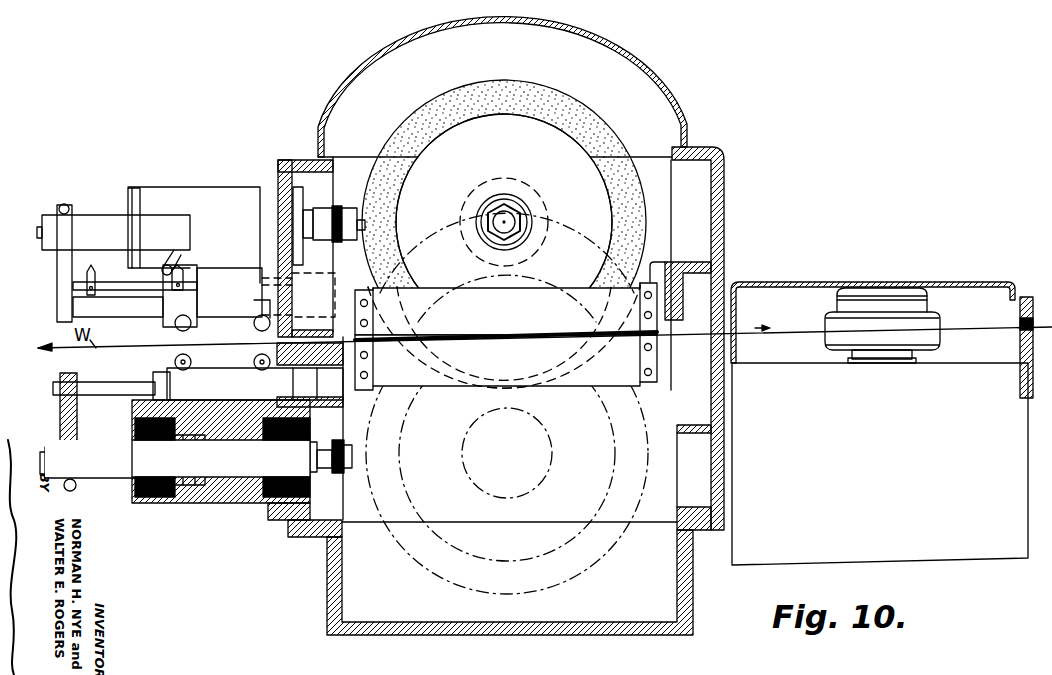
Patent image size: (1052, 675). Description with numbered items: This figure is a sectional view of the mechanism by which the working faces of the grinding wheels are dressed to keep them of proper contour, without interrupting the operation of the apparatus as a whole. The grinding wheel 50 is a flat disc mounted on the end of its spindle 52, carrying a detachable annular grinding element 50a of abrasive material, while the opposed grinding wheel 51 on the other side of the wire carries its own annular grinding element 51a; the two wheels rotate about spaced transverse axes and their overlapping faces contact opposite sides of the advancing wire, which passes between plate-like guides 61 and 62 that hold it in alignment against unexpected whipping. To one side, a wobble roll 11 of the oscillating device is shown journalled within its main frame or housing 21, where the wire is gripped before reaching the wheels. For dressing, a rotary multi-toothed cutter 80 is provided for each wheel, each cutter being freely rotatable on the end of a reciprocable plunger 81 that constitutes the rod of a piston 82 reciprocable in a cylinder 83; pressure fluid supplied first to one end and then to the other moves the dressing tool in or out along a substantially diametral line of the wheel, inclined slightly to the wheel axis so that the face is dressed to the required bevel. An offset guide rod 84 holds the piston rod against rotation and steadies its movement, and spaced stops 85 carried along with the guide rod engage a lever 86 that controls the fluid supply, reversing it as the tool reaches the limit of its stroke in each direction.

The wobble roll 11 is at (935, 325).
The main frame or housing 21 is at (1013, 283).
The grinding wheel 50 is at (504, 222).
The grinding element 50a is at (592, 118).
The grinding wheel 51 is at (507, 453).
The grinding element 51a is at (622, 535).
The spindle 52 is at (520, 224).
The plate-like guide 61 is at (448, 285).
The plate-like guide 62 is at (470, 388).
The rotary multi-toothed cutter 80 is at (333, 232).
The reciprocable plunger 81 is at (95, 214).
The piston 82 is at (197, 497).
The cylinder 83 is at (208, 188).
The offset guide rod 84 is at (120, 300).
The stop 85 is at (86, 272).
The lever 86 is at (172, 262).